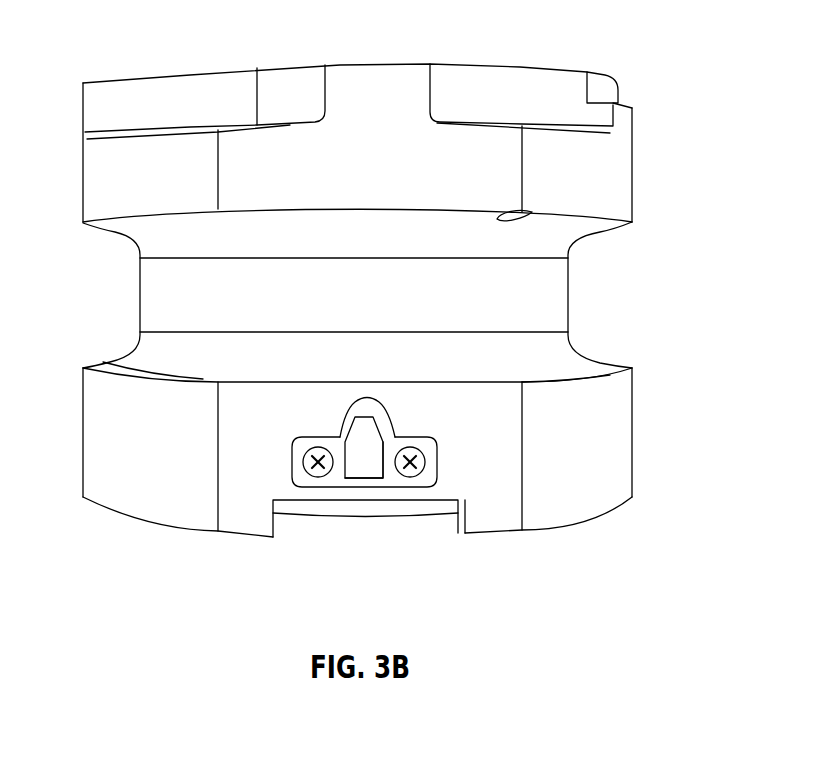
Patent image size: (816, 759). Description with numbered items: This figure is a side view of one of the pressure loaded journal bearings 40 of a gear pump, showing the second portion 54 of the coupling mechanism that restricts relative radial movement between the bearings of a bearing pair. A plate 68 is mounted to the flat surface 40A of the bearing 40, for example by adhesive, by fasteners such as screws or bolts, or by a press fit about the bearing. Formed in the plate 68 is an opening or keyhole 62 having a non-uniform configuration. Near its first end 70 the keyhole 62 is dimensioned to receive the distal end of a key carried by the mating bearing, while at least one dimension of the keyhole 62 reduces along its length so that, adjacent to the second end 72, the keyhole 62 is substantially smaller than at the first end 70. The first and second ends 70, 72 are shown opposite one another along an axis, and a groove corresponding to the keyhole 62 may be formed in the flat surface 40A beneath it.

The pressure loaded journal bearing 40 is at (626, 36).
The flat surface 40A is at (237, 503).
The second portion 54 is at (437, 499).
The keyhole 62 is at (363, 460).
The plate 68 is at (398, 440).
The first end 70 is at (382, 478).
The second end 72 is at (358, 442).